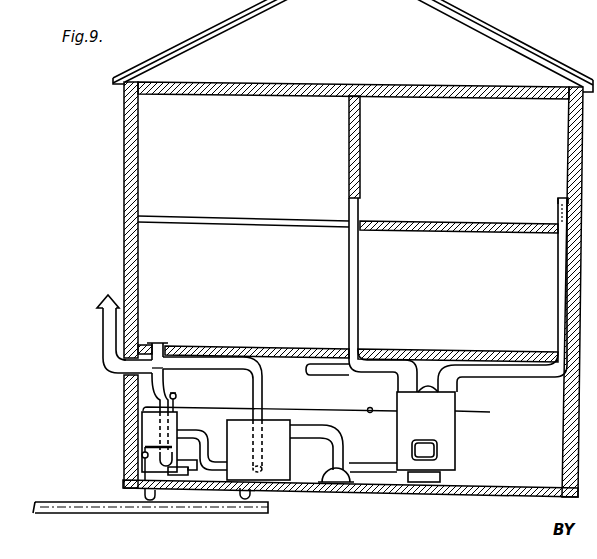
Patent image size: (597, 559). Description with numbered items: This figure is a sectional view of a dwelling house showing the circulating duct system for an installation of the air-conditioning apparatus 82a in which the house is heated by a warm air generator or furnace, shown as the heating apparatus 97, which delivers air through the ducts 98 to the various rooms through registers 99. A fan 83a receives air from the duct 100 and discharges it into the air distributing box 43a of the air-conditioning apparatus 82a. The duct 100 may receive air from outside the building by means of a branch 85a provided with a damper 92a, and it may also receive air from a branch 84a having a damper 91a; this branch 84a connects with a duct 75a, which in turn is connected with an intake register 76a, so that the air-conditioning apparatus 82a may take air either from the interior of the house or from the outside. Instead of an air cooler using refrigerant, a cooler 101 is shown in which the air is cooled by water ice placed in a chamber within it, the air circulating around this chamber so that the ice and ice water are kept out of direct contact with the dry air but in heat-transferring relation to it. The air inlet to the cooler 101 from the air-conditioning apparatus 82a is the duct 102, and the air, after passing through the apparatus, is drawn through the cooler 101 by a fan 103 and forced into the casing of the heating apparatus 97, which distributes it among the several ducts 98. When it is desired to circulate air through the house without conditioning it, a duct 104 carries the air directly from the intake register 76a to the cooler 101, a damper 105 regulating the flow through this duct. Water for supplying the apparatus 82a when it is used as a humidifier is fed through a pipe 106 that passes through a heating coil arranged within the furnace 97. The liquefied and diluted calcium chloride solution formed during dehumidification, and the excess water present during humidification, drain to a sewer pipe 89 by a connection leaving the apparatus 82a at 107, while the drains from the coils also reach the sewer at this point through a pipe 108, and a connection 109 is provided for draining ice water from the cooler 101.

The air distributing box 43a is at (190, 476).
The duct 75a is at (222, 365).
The intake register 76a is at (155, 343).
The air-conditioning apparatus 82a is at (143, 425).
The fan 83a is at (171, 478).
The branch 84a is at (176, 392).
The branch 85a is at (104, 340).
The sewer pipe 89 is at (86, 503).
The damper 91a is at (171, 378).
The damper 92a is at (120, 374).
The heating apparatus 97 is at (449, 433).
The ducts 98 is at (383, 372).
The registers 99 is at (348, 205).
The duct 100 is at (158, 404).
The cooler 101 is at (292, 455).
The duct 102 is at (216, 437).
The fan 103 is at (344, 480).
The duct 104 is at (263, 360).
The damper 105 is at (262, 398).
The pipe 106 is at (232, 408).
The connection 107 is at (140, 468).
The pipe 108 is at (141, 455).
The connection 109 is at (263, 488).